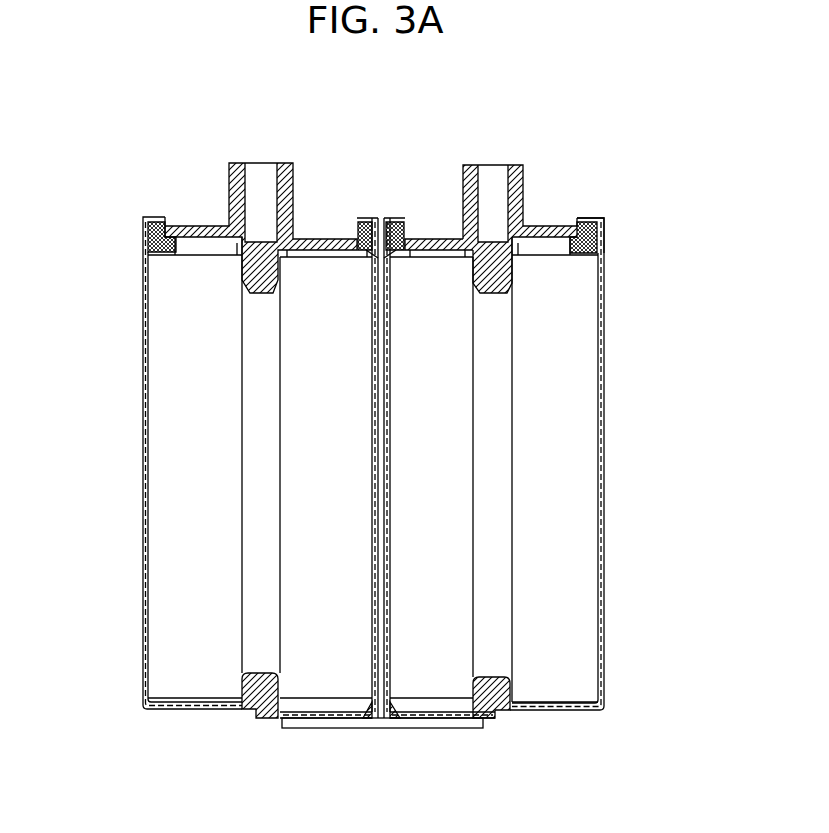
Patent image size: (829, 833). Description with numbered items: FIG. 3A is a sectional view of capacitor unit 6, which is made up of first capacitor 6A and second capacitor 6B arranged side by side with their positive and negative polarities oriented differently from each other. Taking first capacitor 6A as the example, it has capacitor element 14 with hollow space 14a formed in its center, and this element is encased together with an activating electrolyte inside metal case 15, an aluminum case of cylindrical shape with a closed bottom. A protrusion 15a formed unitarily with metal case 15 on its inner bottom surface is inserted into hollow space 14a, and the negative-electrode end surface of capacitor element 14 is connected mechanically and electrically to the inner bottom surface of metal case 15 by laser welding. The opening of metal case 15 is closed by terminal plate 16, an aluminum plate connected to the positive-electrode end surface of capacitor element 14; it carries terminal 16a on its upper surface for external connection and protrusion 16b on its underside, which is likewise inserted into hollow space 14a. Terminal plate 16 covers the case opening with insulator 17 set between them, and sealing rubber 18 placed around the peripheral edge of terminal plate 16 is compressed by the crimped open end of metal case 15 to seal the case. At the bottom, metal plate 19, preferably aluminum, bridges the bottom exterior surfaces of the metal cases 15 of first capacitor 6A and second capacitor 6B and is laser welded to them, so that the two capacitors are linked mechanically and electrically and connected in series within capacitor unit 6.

The capacitor unit 6 is at (207, 128).
The first capacitor 6A is at (603, 530).
The second capacitor 6B is at (142, 398).
The capacitor element 14 is at (558, 420).
The hollow space 14a is at (500, 497).
The metal case 15 is at (602, 675).
The protrusion 15a is at (508, 680).
The terminal plate 16 is at (540, 225).
The terminal 16a is at (466, 166).
The protrusion 16b is at (512, 292).
The insulator 17 is at (603, 247).
The sealing rubber 18 is at (582, 224).
The metal plate 19 is at (358, 722).